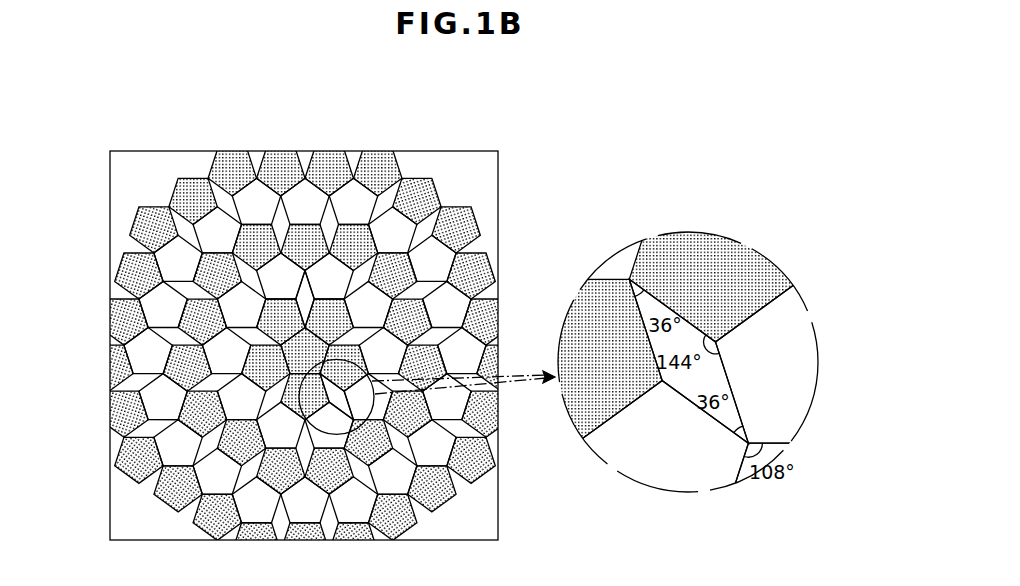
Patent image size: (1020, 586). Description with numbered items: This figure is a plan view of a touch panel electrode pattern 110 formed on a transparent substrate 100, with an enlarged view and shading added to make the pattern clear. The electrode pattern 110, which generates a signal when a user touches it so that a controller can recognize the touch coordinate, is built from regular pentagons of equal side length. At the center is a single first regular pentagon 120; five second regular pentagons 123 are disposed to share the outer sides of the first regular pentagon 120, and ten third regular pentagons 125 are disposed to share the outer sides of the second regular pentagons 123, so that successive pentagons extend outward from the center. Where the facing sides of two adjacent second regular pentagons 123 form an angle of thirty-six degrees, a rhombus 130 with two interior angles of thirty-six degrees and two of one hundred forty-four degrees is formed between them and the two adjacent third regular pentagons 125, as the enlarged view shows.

The transparent substrate 100 is at (302, 151).
The electrode pattern 110 is at (186, 193).
The first regular pentagon 120 is at (305, 351).
The second regular pentagon 123 is at (330, 374).
The third regular pentagon 125 is at (369, 362).
The rhombus 130 is at (257, 388).